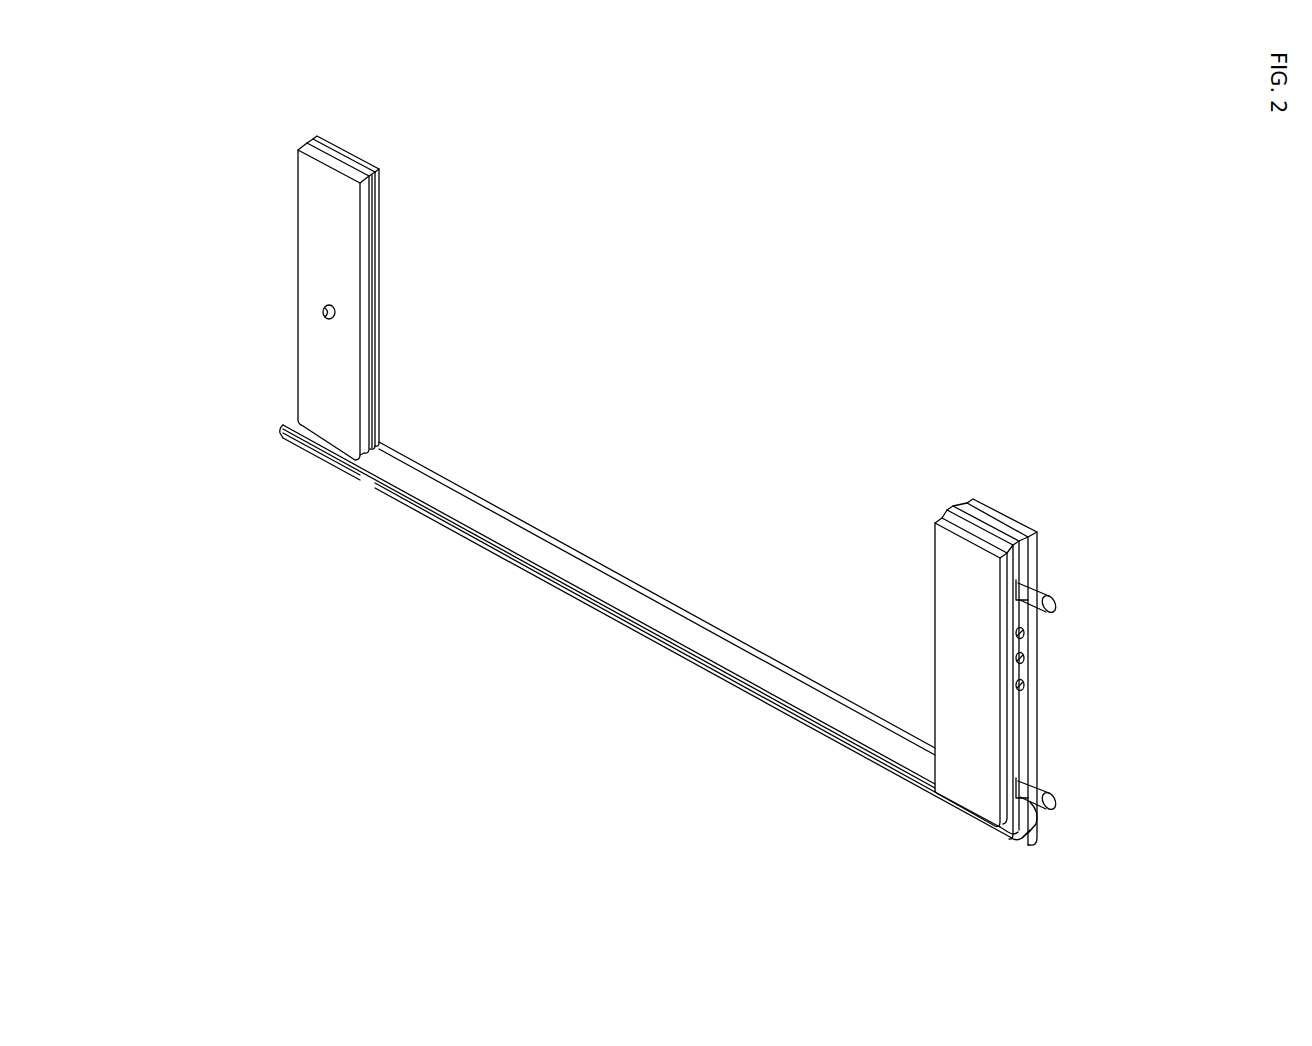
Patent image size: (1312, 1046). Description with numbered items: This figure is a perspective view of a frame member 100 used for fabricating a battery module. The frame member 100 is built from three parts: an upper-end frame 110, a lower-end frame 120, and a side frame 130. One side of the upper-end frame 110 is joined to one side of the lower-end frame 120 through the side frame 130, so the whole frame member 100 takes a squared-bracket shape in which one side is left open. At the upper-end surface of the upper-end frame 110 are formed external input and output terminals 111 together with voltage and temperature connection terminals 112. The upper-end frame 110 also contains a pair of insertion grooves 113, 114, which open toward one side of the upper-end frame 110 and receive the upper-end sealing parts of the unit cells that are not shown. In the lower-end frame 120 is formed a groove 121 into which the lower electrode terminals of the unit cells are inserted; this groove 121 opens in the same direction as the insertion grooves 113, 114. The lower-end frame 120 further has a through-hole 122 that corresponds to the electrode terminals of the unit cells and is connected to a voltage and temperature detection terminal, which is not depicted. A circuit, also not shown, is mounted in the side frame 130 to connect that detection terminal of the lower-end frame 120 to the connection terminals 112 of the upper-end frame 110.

The frame member 100 is at (186, 85).
The upper-end frame 110 is at (878, 544).
The external input and output terminals 111 is at (1054, 600).
The voltage and temperature connection terminals 112 is at (1024, 658).
The insertion groove 113 is at (1033, 812).
The insertion groove 114 is at (1033, 707).
The lower-end frame 120 is at (252, 236).
The groove 121 is at (372, 245).
The through-hole 122 is at (322, 312).
The side frame 130 is at (548, 532).